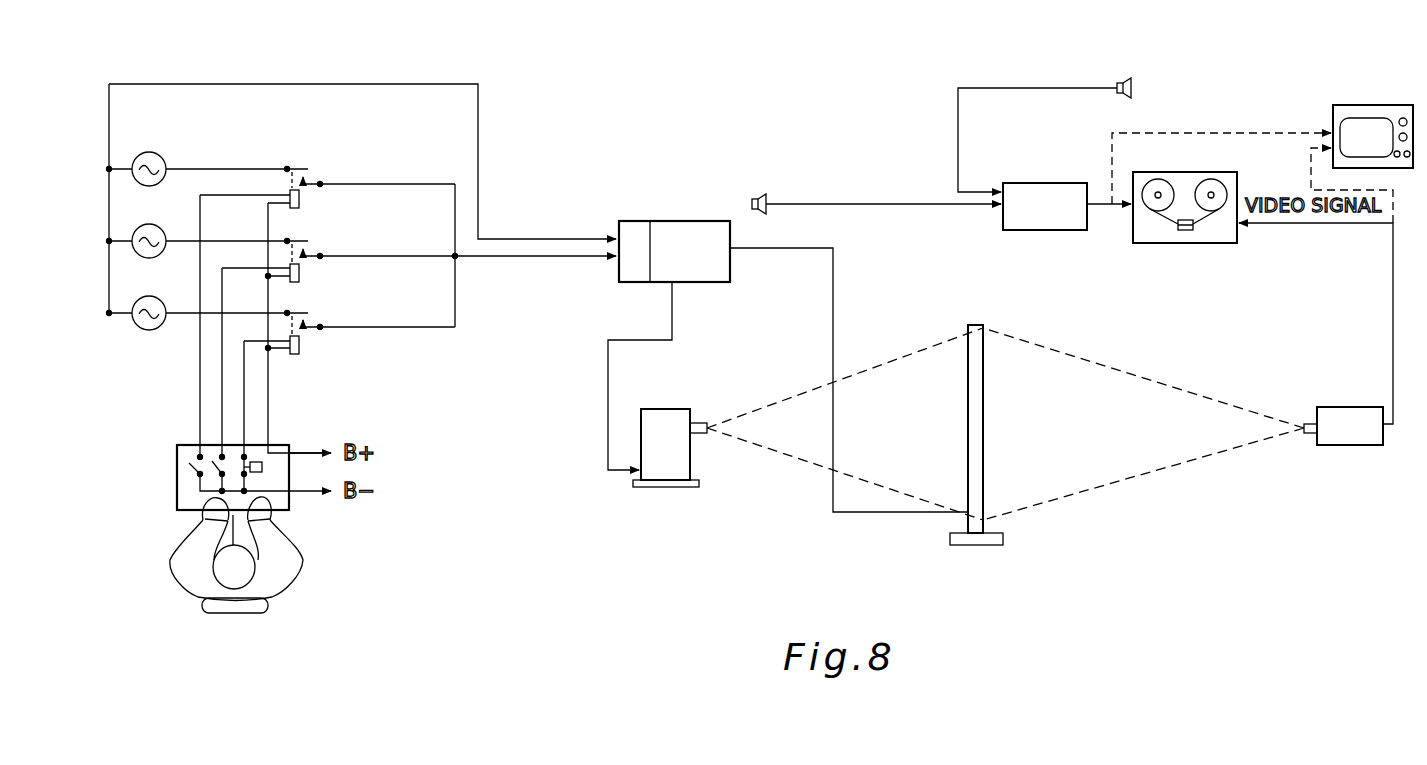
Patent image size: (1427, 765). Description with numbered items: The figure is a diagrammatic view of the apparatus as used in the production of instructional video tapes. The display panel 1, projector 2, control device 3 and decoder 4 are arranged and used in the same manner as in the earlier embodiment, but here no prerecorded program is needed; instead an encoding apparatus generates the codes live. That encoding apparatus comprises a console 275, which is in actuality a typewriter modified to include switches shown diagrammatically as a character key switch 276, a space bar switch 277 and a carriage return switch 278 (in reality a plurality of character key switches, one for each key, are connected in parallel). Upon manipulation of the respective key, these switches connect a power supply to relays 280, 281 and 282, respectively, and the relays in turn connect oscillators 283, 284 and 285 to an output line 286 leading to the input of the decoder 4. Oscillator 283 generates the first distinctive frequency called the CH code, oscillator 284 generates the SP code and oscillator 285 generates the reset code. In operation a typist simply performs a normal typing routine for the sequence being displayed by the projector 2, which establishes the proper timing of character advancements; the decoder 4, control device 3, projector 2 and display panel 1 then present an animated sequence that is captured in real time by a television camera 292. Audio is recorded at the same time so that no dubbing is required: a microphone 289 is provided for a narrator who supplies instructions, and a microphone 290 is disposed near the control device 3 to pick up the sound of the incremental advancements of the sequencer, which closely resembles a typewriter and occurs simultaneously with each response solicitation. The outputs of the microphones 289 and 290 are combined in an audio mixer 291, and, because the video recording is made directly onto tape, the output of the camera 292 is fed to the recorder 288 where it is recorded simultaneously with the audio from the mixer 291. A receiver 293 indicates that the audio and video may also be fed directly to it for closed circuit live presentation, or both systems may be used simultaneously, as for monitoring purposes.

The display panel 1 is at (983, 330).
The projector 2 is at (660, 418).
The control device 3 is at (687, 228).
The decoder 4 is at (635, 228).
The console 275 is at (283, 444).
The character key switch 276 is at (194, 465).
The space bar switch 277 is at (200, 455).
The carriage return switch 278 is at (262, 469).
The relay 280 is at (299, 208).
The relay 281 is at (299, 282).
The relay 282 is at (299, 354).
The oscillator 283 is at (161, 158).
The oscillator 284 is at (168, 218).
The oscillator 285 is at (157, 299).
The output line 286 is at (503, 259).
The recorder 288 is at (1187, 244).
The microphone 289 is at (1124, 80).
The microphone 290 is at (765, 198).
The audio mixer 291 is at (1041, 190).
The television camera 292 is at (1352, 413).
The receiver 293 is at (1366, 108).